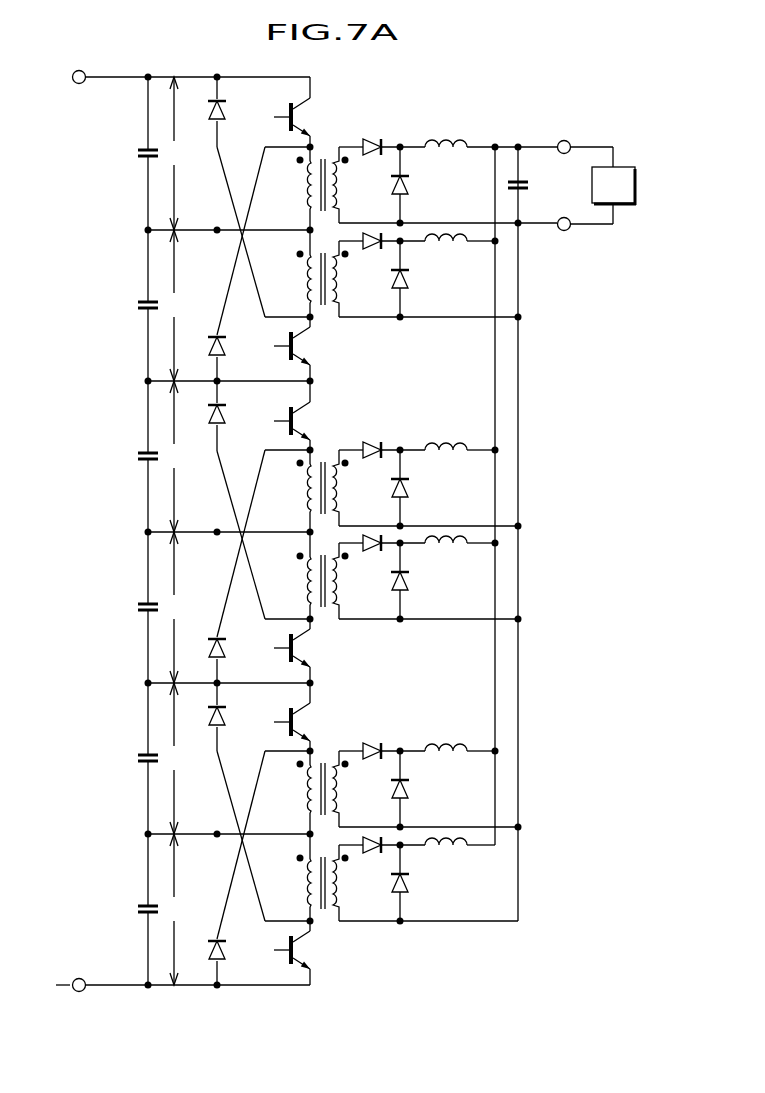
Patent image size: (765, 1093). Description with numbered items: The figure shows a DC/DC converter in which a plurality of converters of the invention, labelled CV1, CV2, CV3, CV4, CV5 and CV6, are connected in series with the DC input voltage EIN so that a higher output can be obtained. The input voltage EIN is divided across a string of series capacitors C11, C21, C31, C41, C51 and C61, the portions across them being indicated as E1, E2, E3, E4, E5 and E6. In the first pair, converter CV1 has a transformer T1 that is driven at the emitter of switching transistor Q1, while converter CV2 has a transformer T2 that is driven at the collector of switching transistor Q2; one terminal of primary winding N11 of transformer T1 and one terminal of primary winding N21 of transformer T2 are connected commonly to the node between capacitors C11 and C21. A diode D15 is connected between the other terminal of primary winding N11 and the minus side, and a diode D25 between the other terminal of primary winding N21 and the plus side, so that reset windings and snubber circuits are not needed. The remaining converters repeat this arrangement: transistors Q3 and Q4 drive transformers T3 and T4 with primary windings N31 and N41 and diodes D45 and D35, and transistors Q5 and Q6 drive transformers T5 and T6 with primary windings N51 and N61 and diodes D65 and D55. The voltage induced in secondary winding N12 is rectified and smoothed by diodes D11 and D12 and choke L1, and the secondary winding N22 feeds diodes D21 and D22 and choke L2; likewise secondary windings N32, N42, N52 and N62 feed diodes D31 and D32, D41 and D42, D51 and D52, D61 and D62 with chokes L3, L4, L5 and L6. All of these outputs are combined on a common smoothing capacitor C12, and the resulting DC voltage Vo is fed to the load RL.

The transistor Q1 is at (300, 127).
The transistor Q2 is at (300, 347).
The switching transistor Q3 is at (302, 424).
The switching transistor Q4 is at (300, 650).
The switching transistor Q5 is at (302, 723).
The switching transistor Q6 is at (300, 951).
The diode D15 is at (259, 264).
The diode D25 is at (259, 197).
The clamp diode D35 is at (259, 566).
The clamp diode D45 is at (259, 500).
The clamp diode D55 is at (259, 868).
The clamp diode D65 is at (259, 802).
The transformer T1 is at (325, 186).
The transformer T2 is at (325, 273).
The transformer T3 is at (325, 490).
The transformer T4 is at (325, 575).
The transformer T5 is at (325, 791).
The transformer T6 is at (325, 877).
The primary winding N11 is at (289, 183).
The secondary winding N12 is at (358, 185).
The primary winding N21 is at (289, 277).
The secondary winding N22 is at (358, 279).
The primary winding N31 is at (289, 486).
The secondary winding N32 is at (358, 488).
The primary winding N41 is at (289, 579).
The secondary winding N42 is at (358, 581).
The primary winding N51 is at (289, 787).
The secondary winding N52 is at (358, 789).
The primary winding N61 is at (289, 881).
The secondary winding N62 is at (358, 883).
The diode D11 is at (378, 161).
The diode D12 is at (418, 185).
The rectifier diode D21 is at (378, 255).
The diode D22 is at (418, 279).
The rectifier diode D31 is at (378, 464).
The flywheel diode D32 is at (418, 488).
The rectifier diode D41 is at (378, 557).
The flywheel diode D42 is at (418, 581).
The rectifier diode D51 is at (378, 765).
The flywheel diode D52 is at (418, 789).
The rectifier diode D61 is at (378, 859).
The flywheel diode D62 is at (418, 883).
The choke L1 is at (446, 163).
The choke L2 is at (446, 257).
The choke coil L3 is at (446, 466).
The choke coil L4 is at (446, 559).
The choke coil L5 is at (446, 767).
The choke coil L6 is at (446, 861).
The converter CV1 is at (340, 138).
The converter CV2 is at (330, 313).
The converter unit CV3 is at (345, 445).
The converter unit CV4 is at (332, 617).
The converter unit CV5 is at (343, 745).
The converter unit CV6 is at (332, 920).
The capacitor C11 is at (133, 153).
The capacitor C21 is at (133, 305).
The input dividing capacitor C31 is at (133, 456).
The input dividing capacitor C41 is at (133, 607).
The input dividing capacitor C51 is at (133, 758).
The input dividing capacitor C61 is at (133, 909).
The smoothing capacitor C12 is at (527, 181).
The divided input voltage E1 is at (175, 153).
The divided input voltage E2 is at (175, 305).
The divided input voltage E3 is at (175, 456).
The divided input voltage E4 is at (175, 607).
The divided input voltage E5 is at (175, 758).
The divided input voltage E6 is at (175, 909).
The DC input voltage EIN is at (79, 84).
The DC voltage Vo is at (564, 154).
The load RL is at (603, 185).